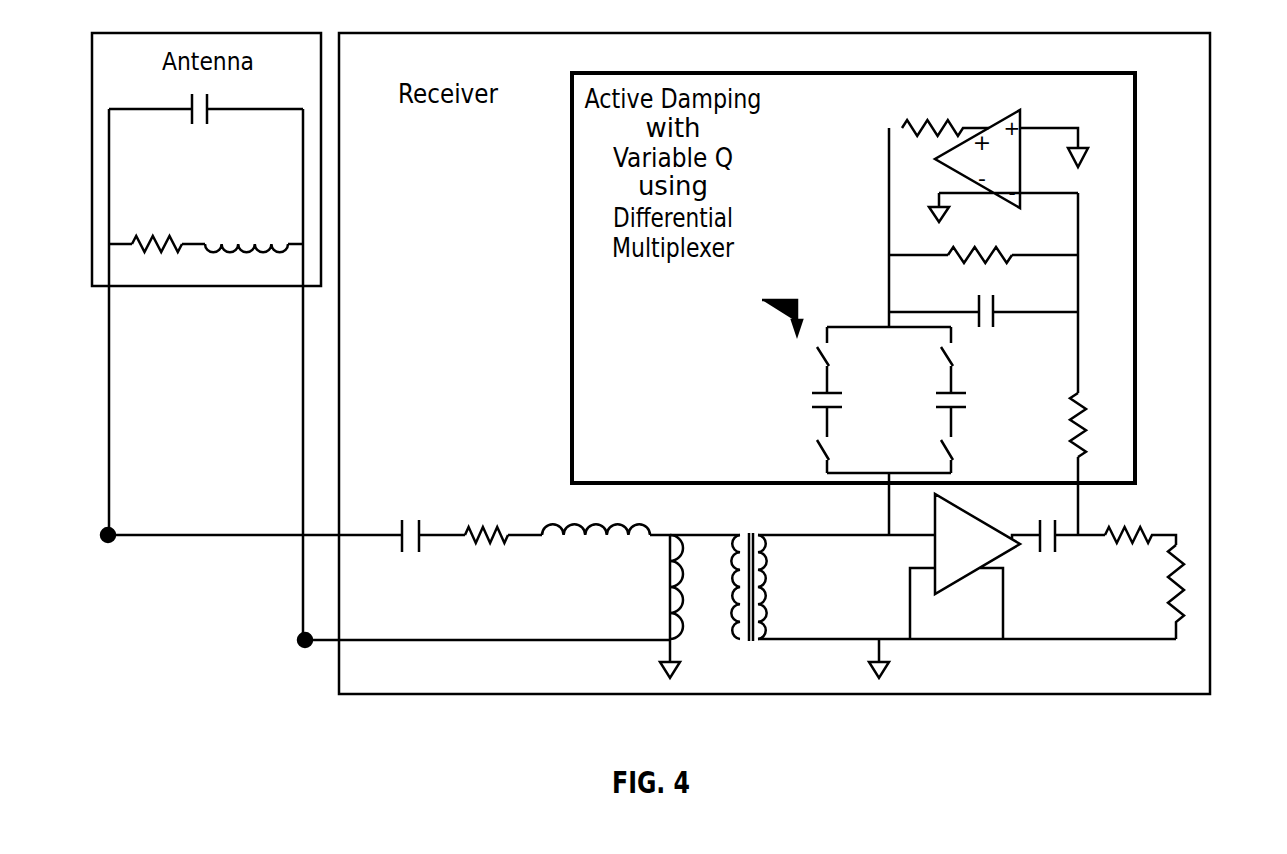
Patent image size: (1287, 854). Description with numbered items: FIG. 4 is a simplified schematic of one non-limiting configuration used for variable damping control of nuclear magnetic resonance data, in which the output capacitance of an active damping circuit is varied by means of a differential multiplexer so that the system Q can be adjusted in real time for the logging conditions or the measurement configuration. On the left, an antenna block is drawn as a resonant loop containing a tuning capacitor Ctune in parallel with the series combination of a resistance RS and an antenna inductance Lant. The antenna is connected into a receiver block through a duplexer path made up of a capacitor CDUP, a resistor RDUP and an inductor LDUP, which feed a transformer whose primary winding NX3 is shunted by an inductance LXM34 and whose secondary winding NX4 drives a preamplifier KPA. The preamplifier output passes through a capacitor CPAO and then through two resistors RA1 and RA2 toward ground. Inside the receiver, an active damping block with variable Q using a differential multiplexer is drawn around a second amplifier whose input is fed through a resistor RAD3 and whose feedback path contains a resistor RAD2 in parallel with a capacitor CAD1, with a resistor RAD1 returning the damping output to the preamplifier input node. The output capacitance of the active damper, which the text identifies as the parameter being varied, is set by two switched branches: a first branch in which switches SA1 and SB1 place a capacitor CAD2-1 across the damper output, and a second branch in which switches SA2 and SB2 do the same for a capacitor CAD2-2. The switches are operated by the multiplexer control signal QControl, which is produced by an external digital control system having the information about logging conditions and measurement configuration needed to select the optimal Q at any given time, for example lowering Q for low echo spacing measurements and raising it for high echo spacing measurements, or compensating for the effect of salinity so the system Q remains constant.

The antenna tuning capacitor Ctune is at (199, 127).
The antenna series resistance RS is at (157, 222).
The antenna inductance Lant is at (246, 222).
The duplexer capacitor CDUP is at (395, 520).
The duplexer resistor RDUP is at (482, 515).
The duplexer inductor LDUP is at (596, 512).
The transformer magnetizing inductance LXM34 is at (637, 587).
The transformer primary winding NX3 is at (727, 566).
The transformer secondary winding NX4 is at (776, 565).
The preamplifier KPA is at (975, 566).
The preamplifier output capacitor CPAO is at (1064, 556).
The attenuator resistor 1 RA1 is at (1140, 516).
The attenuator resistor 2 RA2 is at (1149, 592).
The active damping resistor 3 RAD3 is at (945, 108).
The active damping resistor 2 RAD2 is at (981, 235).
The active damping capacitor 1 CAD1 is at (992, 329).
The active damping resistor 1 RAD1 is at (1044, 425).
The Q control signal QControl is at (792, 296).
The switch A1 SA1 is at (800, 360).
The switch A2 SA2 is at (923, 360).
The switch B1 SB1 is at (800, 451).
The switch B2 SB2 is at (923, 451).
The active damping capacitor 2-1 CAD2-1 is at (783, 410).
The active damping capacitor 2-2 CAD2-2 is at (907, 410).